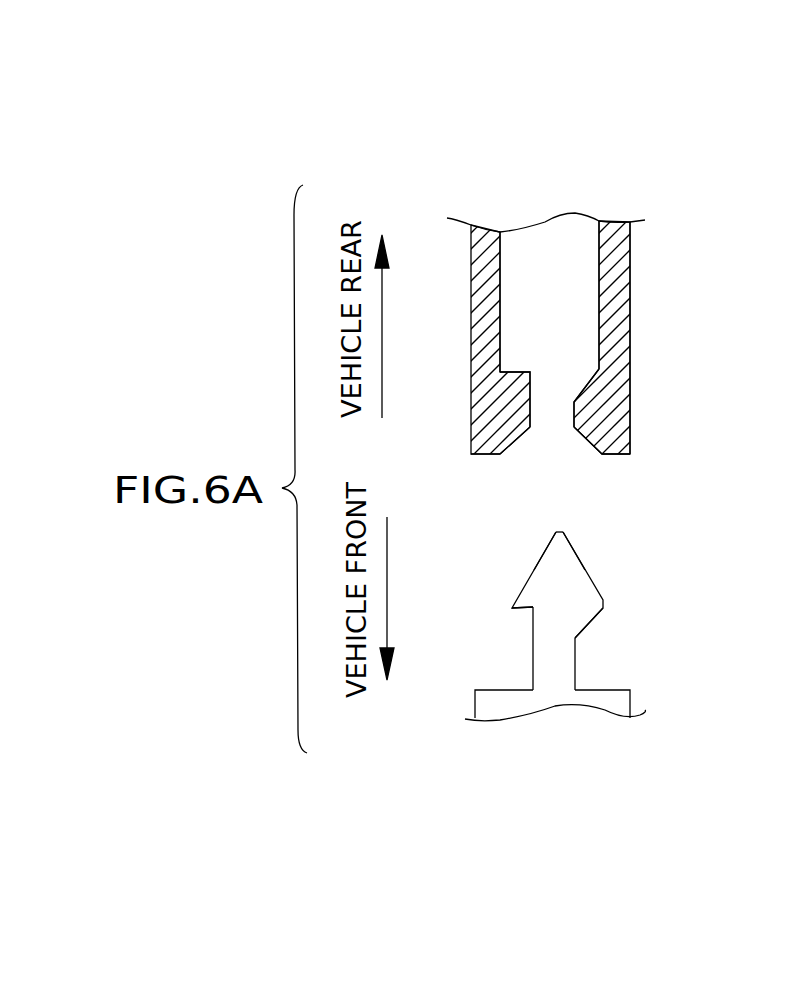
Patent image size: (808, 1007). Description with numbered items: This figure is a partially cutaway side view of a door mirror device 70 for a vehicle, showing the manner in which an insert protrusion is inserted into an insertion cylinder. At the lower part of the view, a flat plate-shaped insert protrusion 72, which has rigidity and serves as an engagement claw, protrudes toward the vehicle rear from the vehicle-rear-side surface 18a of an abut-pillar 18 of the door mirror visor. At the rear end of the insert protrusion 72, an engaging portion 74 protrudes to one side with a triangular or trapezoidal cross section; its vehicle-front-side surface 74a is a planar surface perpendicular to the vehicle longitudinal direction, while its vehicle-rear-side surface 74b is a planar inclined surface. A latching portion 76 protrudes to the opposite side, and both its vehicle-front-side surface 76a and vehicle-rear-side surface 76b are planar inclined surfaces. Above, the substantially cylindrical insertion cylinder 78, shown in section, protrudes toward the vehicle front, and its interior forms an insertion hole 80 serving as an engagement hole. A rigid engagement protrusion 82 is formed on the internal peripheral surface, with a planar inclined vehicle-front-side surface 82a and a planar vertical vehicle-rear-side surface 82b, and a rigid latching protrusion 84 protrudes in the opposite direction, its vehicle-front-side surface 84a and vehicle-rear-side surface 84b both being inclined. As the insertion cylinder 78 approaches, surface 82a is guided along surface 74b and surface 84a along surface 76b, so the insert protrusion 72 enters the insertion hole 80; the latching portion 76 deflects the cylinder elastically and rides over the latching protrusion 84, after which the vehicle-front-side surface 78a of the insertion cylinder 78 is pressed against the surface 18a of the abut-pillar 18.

The door mirror device 70 is at (451, 146).
The insertion cylinder 78 is at (470, 268).
The vehicle-front-side surface of insertion cylinder 78a is at (475, 457).
The insertion hole 80 is at (603, 272).
The engagement protrusion 82 is at (533, 382).
The vehicle-front-side surface of engagement protrusion 82a is at (515, 440).
The vehicle-rear-side surface of engagement protrusion 82b is at (510, 369).
The latching protrusion 84 is at (573, 403).
The vehicle-front-side surface of latching protrusion 84a is at (589, 452).
The vehicle-rear-side surface of latching protrusion 84b is at (592, 370).
The insert protrusion 72 is at (562, 531).
The engaging portion 74 is at (513, 591).
The vehicle-front-side surface of engaging portion 74a is at (522, 611).
The vehicle-rear-side surface of engaging portion 74b is at (531, 563).
The latching portion 76 is at (603, 616).
The vehicle-front-side surface of latching portion 76a is at (590, 572).
The vehicle-rear-side surface of latching portion 76b is at (583, 635).
The vehicle-rear-side surface of abut-pillar 18a is at (608, 690).
The abut-pillar 18 is at (631, 700).